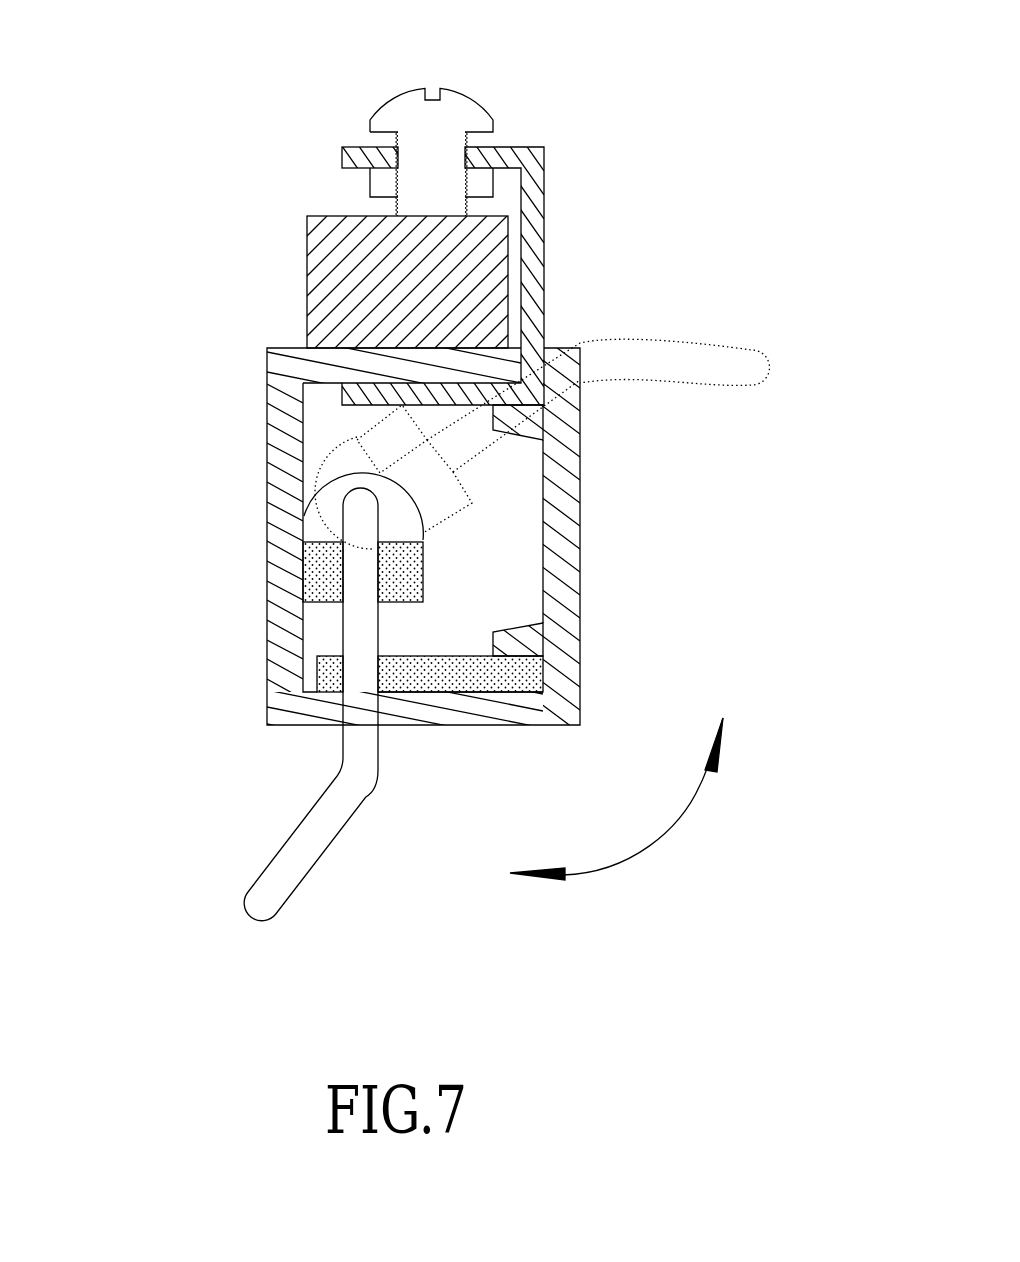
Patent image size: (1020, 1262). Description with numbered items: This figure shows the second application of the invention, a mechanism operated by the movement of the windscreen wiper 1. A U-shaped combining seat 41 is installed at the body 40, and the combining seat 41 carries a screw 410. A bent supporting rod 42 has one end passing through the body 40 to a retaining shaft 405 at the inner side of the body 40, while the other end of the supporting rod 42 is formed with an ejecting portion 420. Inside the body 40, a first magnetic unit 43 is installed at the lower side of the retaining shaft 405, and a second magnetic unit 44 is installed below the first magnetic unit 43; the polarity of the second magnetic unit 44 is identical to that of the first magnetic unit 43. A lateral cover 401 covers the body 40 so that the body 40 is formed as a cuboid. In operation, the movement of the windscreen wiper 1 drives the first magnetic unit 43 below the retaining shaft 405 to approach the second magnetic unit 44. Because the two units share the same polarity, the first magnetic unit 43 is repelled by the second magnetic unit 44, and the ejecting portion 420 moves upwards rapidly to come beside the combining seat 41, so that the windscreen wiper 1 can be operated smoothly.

The windscreen wiper 1 is at (337, 248).
The body 40 is at (422, 547).
The combining seat 41 is at (533, 210).
The supporting rod 42 is at (425, 630).
The first magnetic unit 43 is at (330, 570).
The second magnetic unit 44 is at (460, 673).
The lateral cover 401 is at (562, 632).
The retaining shaft 405 is at (317, 518).
The screw 410 is at (455, 107).
The ejecting portion 420 is at (308, 845).